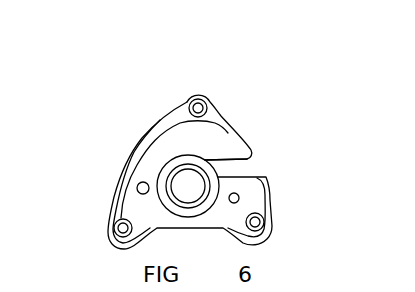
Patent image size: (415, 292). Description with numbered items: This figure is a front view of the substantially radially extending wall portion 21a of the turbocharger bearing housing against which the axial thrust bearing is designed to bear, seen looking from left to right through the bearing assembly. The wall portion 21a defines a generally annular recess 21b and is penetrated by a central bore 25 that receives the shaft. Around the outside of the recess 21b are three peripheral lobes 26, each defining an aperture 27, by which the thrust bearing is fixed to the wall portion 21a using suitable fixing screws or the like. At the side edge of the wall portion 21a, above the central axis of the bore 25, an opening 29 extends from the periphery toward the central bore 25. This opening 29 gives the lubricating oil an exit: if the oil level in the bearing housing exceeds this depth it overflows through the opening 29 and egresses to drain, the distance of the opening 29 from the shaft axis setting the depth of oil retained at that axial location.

The wall portion 21a is at (236, 98).
The annular recess 21b is at (145, 150).
The central bore 25 is at (171, 182).
The peripheral lobes 26 is at (191, 101).
The apertures 27 is at (208, 112).
The opening 29 is at (262, 170).